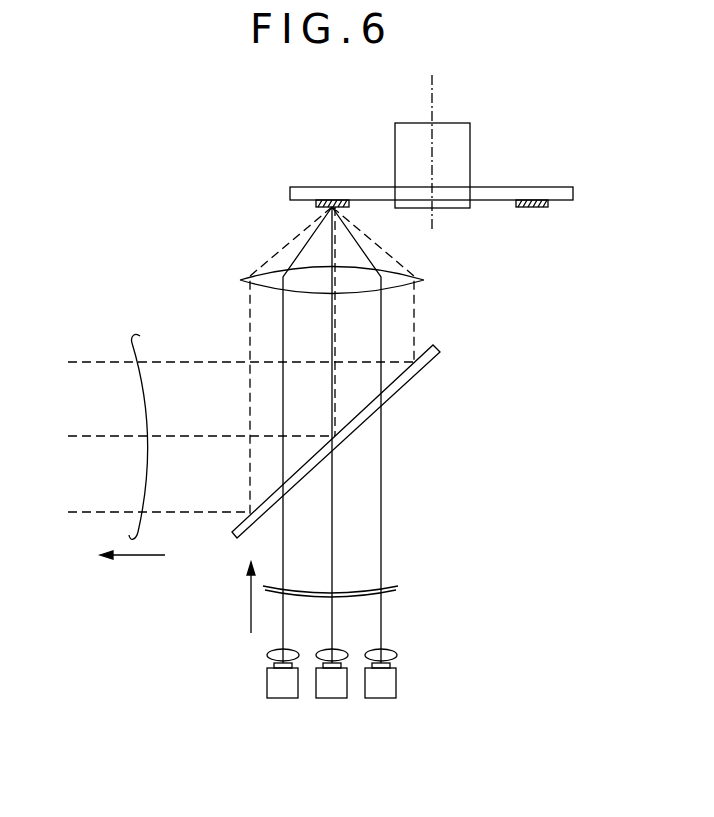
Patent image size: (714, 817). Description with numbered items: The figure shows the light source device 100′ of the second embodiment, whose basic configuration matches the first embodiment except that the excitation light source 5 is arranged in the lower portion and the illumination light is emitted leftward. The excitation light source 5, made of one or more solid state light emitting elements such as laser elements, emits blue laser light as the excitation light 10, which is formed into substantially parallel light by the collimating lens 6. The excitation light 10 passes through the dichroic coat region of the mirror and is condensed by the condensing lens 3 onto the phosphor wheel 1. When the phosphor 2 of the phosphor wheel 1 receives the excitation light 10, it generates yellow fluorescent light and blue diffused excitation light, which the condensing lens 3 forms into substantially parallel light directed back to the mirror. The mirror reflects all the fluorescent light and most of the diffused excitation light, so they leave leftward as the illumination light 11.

The light source device 100′ is at (122, 155).
The phosphor wheel 1 is at (358, 187).
The phosphor 2 is at (328, 208).
The condensing lens 3 is at (424, 280).
The excitation light source 5 is at (397, 680).
The collimating lens 6 is at (397, 655).
The excitation light 10 is at (348, 589).
The illumination light 11 is at (134, 426).